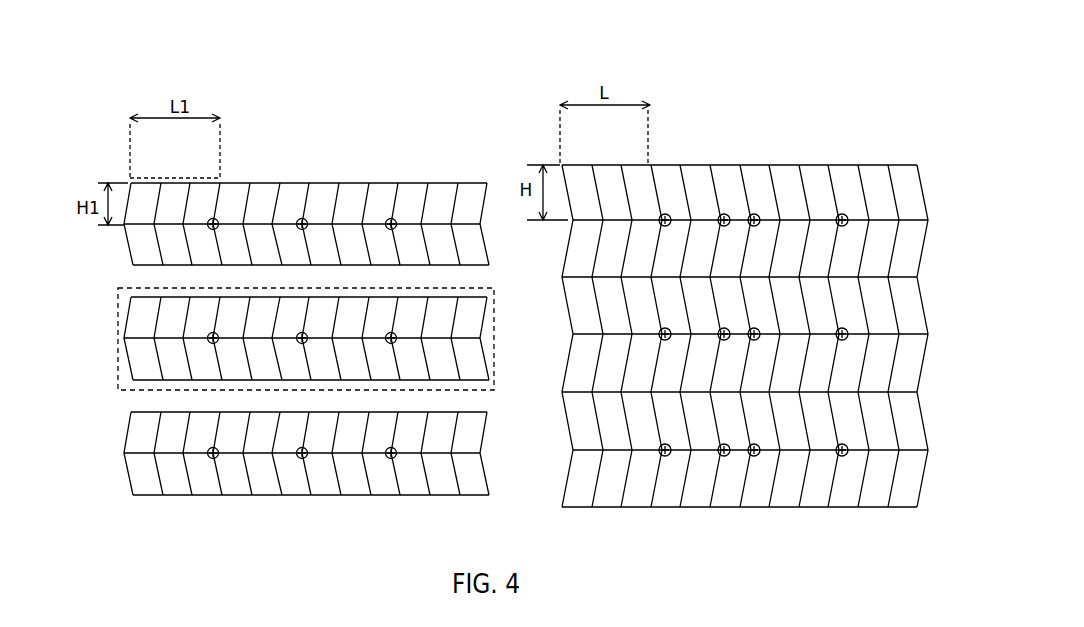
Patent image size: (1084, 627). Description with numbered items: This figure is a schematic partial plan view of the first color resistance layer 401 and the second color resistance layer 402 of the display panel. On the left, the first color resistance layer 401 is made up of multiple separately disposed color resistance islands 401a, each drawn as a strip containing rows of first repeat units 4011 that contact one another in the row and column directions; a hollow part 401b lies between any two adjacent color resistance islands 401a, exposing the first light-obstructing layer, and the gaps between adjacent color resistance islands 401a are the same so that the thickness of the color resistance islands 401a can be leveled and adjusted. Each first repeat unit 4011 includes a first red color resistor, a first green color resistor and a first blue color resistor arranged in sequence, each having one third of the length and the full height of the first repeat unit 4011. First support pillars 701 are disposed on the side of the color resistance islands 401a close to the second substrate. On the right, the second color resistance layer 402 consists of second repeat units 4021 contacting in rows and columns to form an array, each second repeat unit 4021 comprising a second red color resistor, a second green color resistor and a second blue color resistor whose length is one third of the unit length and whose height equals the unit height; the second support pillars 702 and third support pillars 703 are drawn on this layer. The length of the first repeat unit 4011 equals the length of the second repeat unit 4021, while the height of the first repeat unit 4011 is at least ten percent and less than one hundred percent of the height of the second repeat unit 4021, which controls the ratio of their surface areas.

The first color resistance layer 401 is at (267, 253).
The color resistance island 401a is at (118, 323).
The hollow part 401b is at (137, 281).
The first repeat unit 4011 is at (167, 178).
The second color resistance layer 402 is at (744, 259).
The second repeat unit 4021 is at (592, 164).
The first support pillar 701 is at (302, 218).
The second support pillar 702 is at (724, 214).
The third support pillar 703 is at (842, 214).